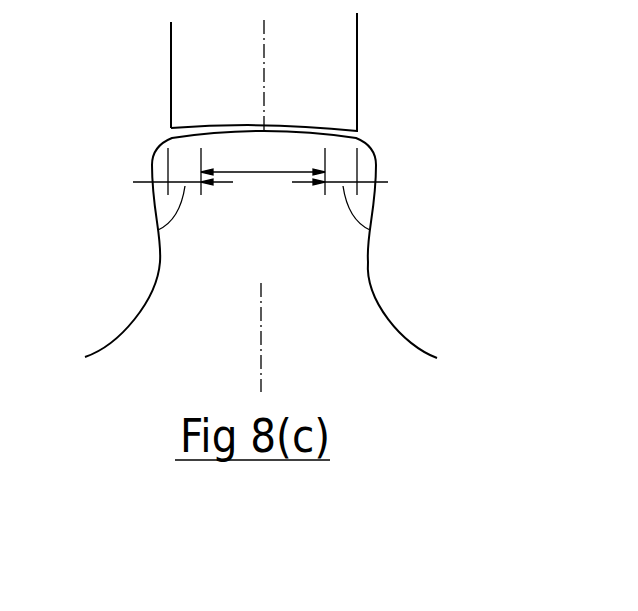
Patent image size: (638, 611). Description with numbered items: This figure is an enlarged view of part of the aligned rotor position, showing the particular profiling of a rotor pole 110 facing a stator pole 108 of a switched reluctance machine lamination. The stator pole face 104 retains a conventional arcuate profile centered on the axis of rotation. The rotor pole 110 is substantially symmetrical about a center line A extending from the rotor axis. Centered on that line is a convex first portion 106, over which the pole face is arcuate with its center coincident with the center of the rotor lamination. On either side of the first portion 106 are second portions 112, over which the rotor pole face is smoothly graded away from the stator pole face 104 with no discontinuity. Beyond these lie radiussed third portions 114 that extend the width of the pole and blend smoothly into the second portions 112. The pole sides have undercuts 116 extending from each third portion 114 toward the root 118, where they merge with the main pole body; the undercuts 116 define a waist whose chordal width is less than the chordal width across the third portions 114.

The stator pole face 104 is at (295, 123).
The stator pole 108 is at (188, 77).
The convex first portion 106 is at (260, 162).
The rotor pole 110 is at (287, 258).
The second portion 112 is at (160, 229).
The third portion 114 is at (151, 160).
The undercut 116 is at (155, 282).
The root 118 is at (285, 335).